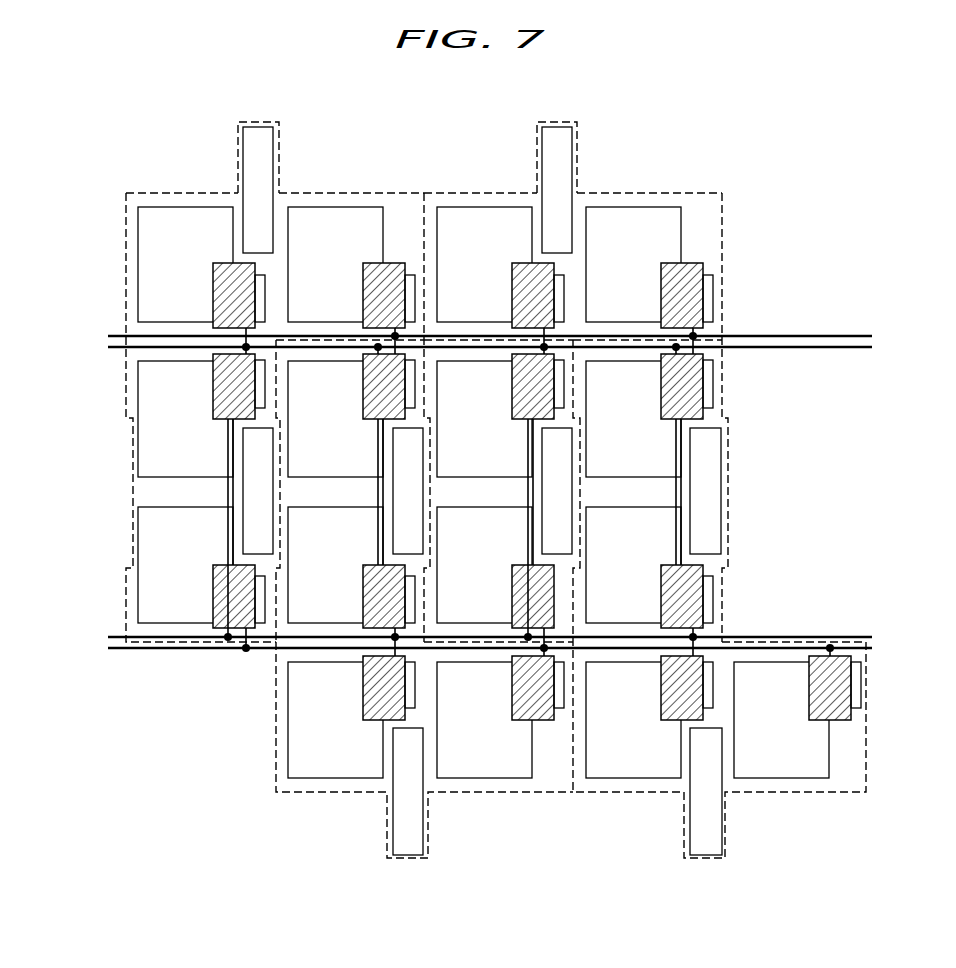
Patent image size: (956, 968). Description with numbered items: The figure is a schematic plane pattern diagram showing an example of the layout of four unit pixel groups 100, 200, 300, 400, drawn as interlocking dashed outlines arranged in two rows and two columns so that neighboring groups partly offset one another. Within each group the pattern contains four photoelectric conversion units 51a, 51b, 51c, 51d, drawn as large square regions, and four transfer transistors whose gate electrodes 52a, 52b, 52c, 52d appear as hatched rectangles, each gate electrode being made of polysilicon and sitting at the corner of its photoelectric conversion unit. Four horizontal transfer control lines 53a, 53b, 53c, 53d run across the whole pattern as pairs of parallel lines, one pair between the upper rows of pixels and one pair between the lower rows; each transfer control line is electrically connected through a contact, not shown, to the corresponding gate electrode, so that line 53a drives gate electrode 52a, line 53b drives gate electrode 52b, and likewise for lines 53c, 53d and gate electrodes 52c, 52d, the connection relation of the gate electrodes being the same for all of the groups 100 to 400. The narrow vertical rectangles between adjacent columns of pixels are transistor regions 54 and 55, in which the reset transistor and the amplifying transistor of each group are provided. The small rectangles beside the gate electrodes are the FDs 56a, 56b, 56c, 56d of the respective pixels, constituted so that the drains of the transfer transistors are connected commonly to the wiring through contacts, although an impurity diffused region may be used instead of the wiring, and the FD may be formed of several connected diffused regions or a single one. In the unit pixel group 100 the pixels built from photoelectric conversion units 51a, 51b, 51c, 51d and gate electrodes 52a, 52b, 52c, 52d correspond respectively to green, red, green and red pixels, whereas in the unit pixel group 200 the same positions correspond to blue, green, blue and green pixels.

The unit pixel group 100 is at (180, 193).
The unit pixel group 200 is at (330, 793).
The unit pixel group 300 is at (477, 193).
The unit pixel group 400 is at (636, 793).
The photoelectric conversion unit 51a is at (343, 210).
The photoelectric conversion unit 51b is at (147, 263).
The photoelectric conversion unit 51c is at (147, 445).
The photoelectric conversion unit 51d is at (147, 553).
The gate electrode 52a is at (363, 278).
The gate electrode 52b is at (213, 278).
The gate electrode 52c is at (212, 377).
The gate electrode 52d is at (212, 583).
The transfer control line 53a is at (118, 336).
The transfer control line 53b is at (118, 348).
The transfer control line 53c is at (118, 637).
The transfer control line 53d is at (118, 650).
The transistor region 54 is at (258, 124).
The transistor region 55 is at (248, 455).
The FD 56a is at (414, 297).
The FD 56b is at (265, 297).
The FD 56c is at (265, 383).
The FD 56d is at (265, 596).